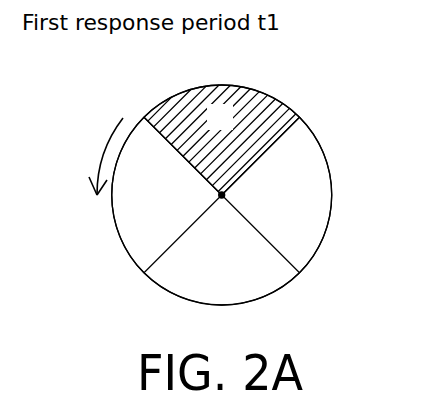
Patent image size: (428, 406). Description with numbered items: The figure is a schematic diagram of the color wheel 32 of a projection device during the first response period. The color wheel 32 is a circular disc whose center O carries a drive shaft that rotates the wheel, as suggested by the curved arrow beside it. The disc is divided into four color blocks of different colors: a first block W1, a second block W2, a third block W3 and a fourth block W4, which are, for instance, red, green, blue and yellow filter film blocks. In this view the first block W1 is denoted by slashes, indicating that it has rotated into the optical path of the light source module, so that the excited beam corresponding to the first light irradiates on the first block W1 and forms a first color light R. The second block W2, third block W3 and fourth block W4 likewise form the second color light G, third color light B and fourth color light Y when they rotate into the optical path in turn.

The color wheel 32 is at (358, 137).
The first block W1 is at (178, 113).
The second block W2 is at (293, 230).
The third block W3 is at (265, 272).
The fourth block W4 is at (147, 232).